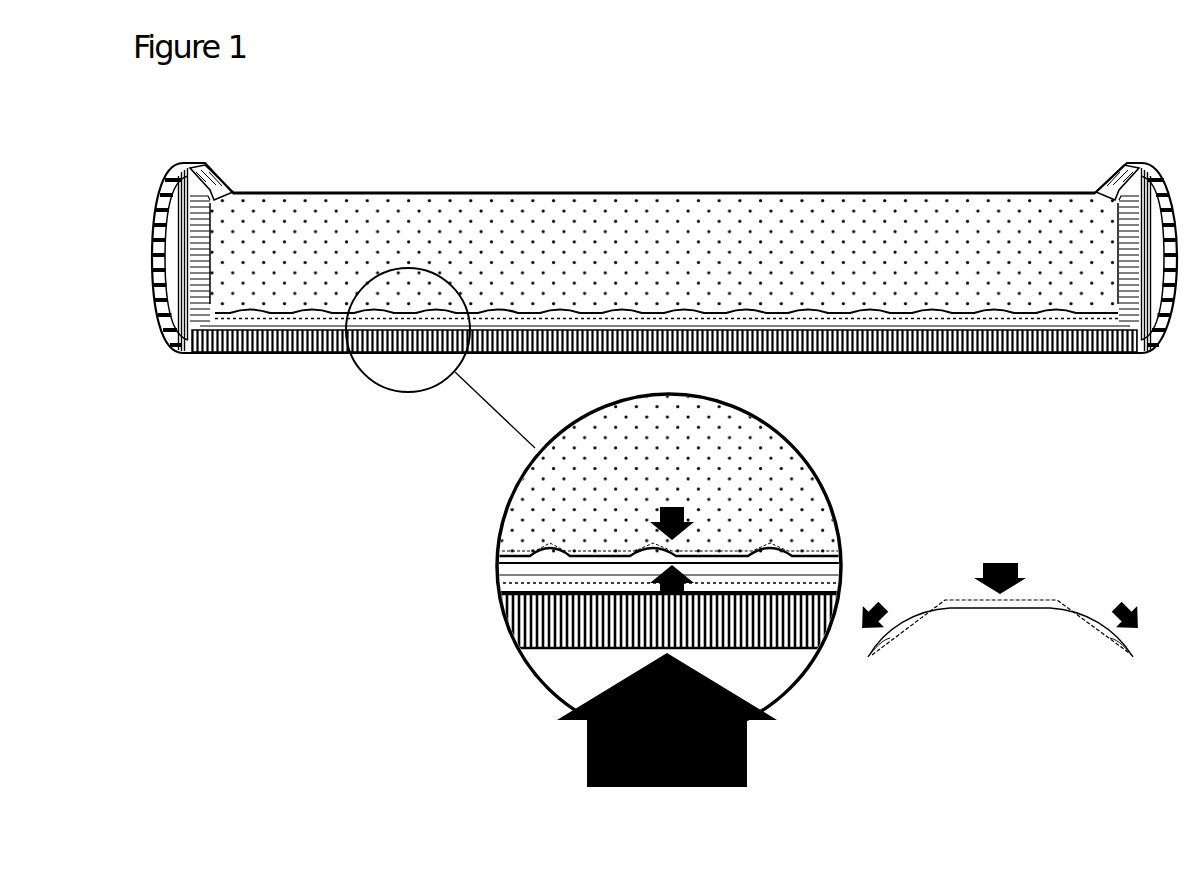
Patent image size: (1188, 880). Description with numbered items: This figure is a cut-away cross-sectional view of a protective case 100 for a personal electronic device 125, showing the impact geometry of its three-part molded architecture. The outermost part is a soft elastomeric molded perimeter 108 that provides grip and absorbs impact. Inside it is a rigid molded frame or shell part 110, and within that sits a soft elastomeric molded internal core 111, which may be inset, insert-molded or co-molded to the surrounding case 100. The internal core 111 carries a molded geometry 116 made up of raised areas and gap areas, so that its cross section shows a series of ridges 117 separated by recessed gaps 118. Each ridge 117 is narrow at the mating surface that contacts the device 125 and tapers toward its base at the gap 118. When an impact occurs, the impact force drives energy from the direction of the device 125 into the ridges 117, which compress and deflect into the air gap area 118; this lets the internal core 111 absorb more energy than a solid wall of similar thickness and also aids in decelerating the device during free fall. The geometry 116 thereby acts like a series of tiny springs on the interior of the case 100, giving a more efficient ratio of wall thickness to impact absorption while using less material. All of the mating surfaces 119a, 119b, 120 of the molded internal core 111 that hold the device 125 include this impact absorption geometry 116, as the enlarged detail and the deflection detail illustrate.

The protective case 100 is at (403, 421).
The soft elastomeric molded perimeter 108 is at (658, 369).
The rigid molded frame or shell part 110 is at (1044, 357).
The soft elastomeric molded internal core 111 is at (218, 172).
The molded geometry 116 is at (693, 529).
The ridges 117 is at (637, 553).
The recessed gaps 118 is at (613, 561).
The mating surface 119a is at (1120, 248).
The mating surface 119b is at (210, 240).
The mating surface 120 is at (668, 306).
The personal electronic device 125 is at (858, 190).